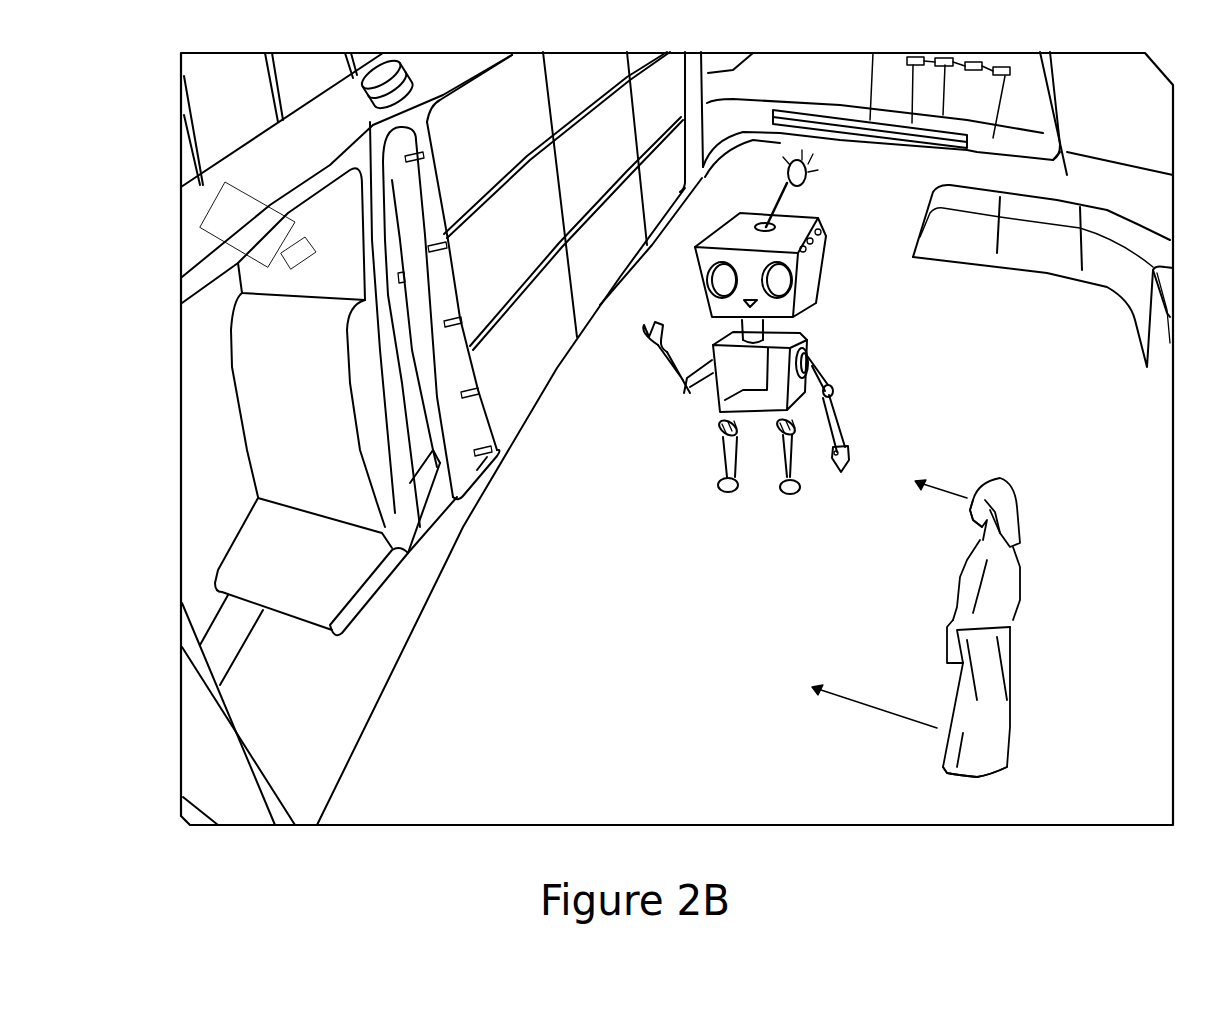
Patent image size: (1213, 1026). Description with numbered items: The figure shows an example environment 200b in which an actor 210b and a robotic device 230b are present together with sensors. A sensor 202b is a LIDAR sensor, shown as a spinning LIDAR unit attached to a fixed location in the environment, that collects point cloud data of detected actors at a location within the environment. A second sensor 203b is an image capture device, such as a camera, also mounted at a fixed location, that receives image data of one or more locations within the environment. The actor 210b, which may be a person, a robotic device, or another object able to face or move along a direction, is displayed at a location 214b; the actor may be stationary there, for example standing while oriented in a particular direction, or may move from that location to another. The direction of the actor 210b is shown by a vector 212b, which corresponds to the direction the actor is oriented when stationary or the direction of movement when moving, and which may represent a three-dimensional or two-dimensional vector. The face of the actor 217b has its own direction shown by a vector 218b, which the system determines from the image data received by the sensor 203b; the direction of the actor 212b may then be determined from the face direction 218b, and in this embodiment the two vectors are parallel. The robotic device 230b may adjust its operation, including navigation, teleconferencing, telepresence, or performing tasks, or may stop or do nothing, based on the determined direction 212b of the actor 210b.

The environment 200b is at (160, 138).
The sensor 202b is at (410, 66).
The sensor 203b is at (258, 210).
The robotic device 230b is at (820, 292).
The location 214b is at (1018, 773).
The face of the actor 217b is at (960, 517).
The vector 218b is at (955, 490).
The vector 212b is at (848, 693).
The actor 210b is at (933, 755).